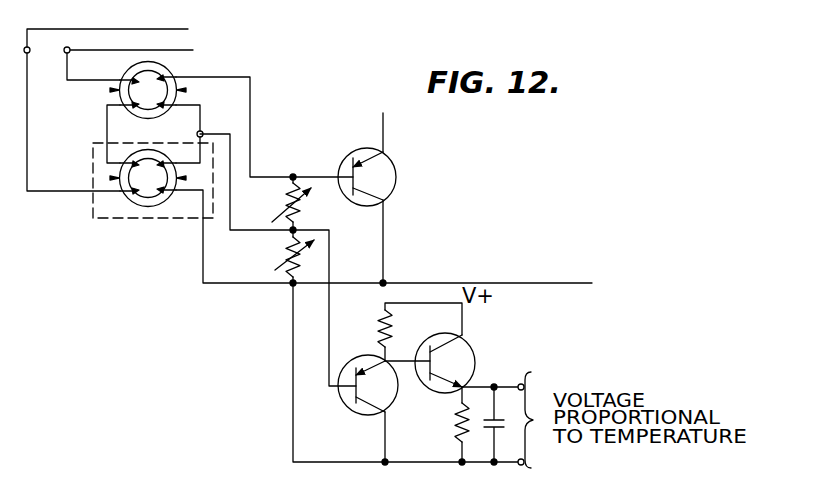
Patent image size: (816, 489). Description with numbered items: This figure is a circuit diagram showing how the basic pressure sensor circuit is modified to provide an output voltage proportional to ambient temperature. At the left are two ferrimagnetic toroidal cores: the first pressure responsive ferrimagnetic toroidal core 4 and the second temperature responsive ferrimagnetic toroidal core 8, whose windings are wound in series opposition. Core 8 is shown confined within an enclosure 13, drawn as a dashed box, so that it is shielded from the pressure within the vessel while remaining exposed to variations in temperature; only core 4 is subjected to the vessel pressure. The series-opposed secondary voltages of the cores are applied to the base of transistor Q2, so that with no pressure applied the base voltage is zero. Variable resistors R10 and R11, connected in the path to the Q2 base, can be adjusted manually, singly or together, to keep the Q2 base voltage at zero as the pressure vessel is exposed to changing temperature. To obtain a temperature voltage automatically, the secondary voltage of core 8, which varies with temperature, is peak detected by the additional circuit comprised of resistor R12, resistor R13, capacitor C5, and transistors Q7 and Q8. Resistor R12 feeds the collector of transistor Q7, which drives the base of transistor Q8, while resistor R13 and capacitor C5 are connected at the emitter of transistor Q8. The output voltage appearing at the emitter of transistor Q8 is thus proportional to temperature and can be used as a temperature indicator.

The first pressure responsive ferrimagnetic torroidal core 4 is at (166, 70).
The second temperature responsive ferrimagnetic torroidal core 8 is at (147, 207).
The enclosure 13 is at (108, 219).
The variable resistor R10 is at (283, 208).
The variable resistor R11 is at (281, 258).
The transistor Q2 is at (397, 178).
The resistor R12 is at (378, 330).
The transistor Q7 is at (340, 394).
The transistor Q8 is at (472, 351).
The resistor R13 is at (453, 422).
The capacitor C5 is at (489, 431).